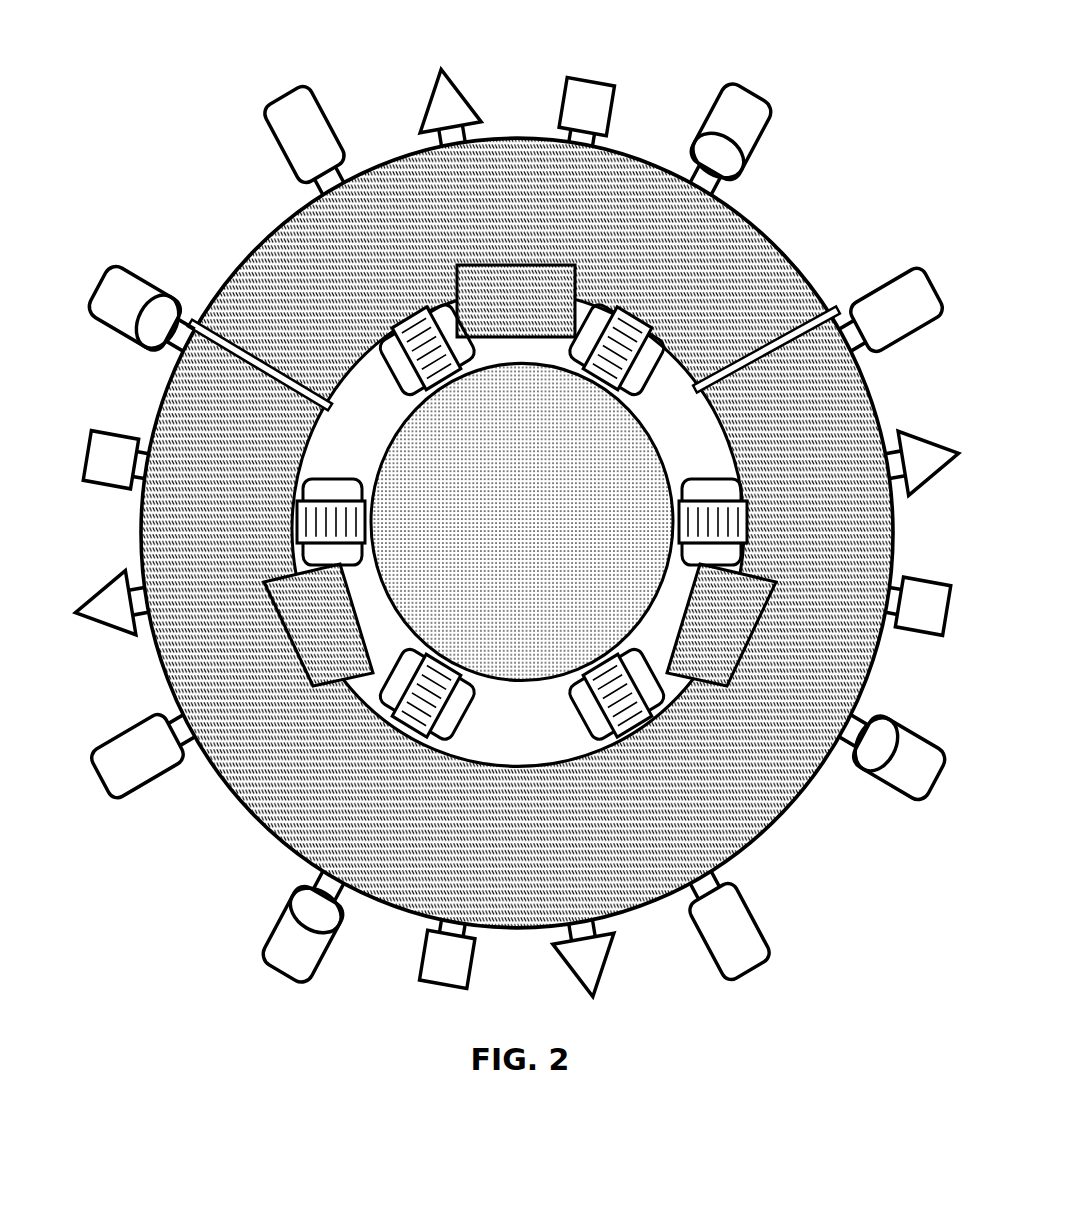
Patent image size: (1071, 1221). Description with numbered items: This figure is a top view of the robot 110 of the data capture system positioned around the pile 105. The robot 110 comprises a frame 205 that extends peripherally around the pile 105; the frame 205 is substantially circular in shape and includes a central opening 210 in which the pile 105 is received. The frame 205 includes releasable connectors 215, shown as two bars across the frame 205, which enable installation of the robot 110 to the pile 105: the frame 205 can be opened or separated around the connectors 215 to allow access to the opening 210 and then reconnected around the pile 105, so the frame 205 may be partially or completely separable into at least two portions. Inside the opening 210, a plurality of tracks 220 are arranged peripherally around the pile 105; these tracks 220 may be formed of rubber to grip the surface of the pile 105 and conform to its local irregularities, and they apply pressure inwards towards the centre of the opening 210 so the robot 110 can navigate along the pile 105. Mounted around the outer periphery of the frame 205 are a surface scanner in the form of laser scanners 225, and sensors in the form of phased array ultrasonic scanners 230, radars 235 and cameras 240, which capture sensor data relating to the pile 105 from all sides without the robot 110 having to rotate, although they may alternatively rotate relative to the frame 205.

The robot 110 is at (168, 114).
The pile 105 is at (522, 521).
The frame 205 is at (305, 237).
The opening 210 is at (543, 742).
The releasable connectors 215 is at (253, 360).
The tracks 220 is at (755, 522).
The laser scanners 225 is at (300, 98).
The phased array ultrasonic scanners 230 is at (447, 88).
The radars 235 is at (600, 88).
The cameras 240 is at (750, 100).